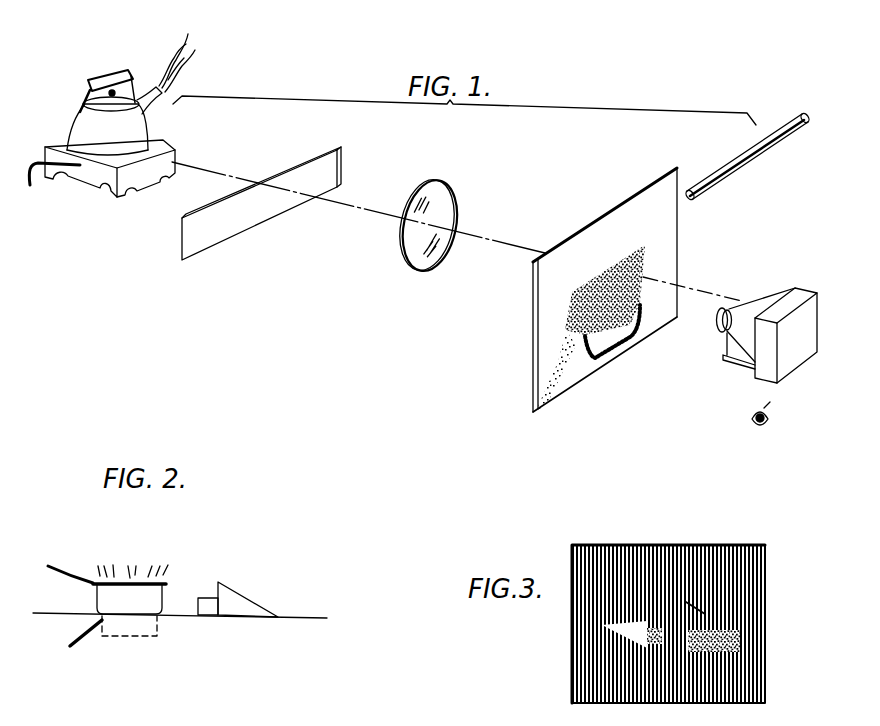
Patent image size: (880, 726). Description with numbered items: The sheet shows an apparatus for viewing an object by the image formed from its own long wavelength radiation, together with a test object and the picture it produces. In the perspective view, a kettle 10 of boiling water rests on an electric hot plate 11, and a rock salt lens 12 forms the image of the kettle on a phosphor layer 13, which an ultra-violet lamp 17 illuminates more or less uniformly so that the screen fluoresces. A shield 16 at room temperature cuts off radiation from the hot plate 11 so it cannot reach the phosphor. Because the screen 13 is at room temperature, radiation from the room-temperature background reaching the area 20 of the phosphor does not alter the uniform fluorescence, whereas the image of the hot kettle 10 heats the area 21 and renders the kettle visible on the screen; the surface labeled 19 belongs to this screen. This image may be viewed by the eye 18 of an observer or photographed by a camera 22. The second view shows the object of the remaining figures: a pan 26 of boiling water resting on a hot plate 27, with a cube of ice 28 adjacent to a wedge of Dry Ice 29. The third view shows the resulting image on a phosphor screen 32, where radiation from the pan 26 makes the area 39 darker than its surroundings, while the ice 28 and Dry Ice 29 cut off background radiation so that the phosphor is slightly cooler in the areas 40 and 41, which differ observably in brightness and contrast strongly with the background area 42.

In FIG. 1, the kettle 10 is at (77, 122).
In FIG. 1, the electric hot plate 11 is at (92, 177).
In FIG. 1, the rock salt lens 12 is at (442, 193).
In FIG. 1, the phosphor layer 13 is at (648, 187).
In FIG. 1, the shield 16 is at (337, 157).
In FIG. 1, the ultra-violet lamp 17 is at (742, 158).
In FIG. 1, the eye 18 is at (752, 420).
In FIG. 1, the screen surface 19 is at (572, 252).
In FIG. 1, the area of the phosphor 20 is at (657, 315).
In FIG. 1, the area of the phosphor 21 is at (614, 262).
In FIG. 1, the camera 22 is at (763, 358).
In FIG. 2, the pan 26 is at (135, 588).
In FIG. 2, the hot plate 27 is at (157, 626).
In FIG. 2, the cube of ice 28 is at (210, 598).
In FIG. 2, the wedge of Dry Ice 29 is at (233, 597).
In FIG. 3, the phosphor screen 32 is at (705, 547).
In FIG. 3, the area 39 is at (740, 628).
In FIG. 3, the area 40 is at (652, 623).
In FIG. 3, the area 41 is at (618, 634).
In FIG. 3, the background area 42 is at (743, 675).